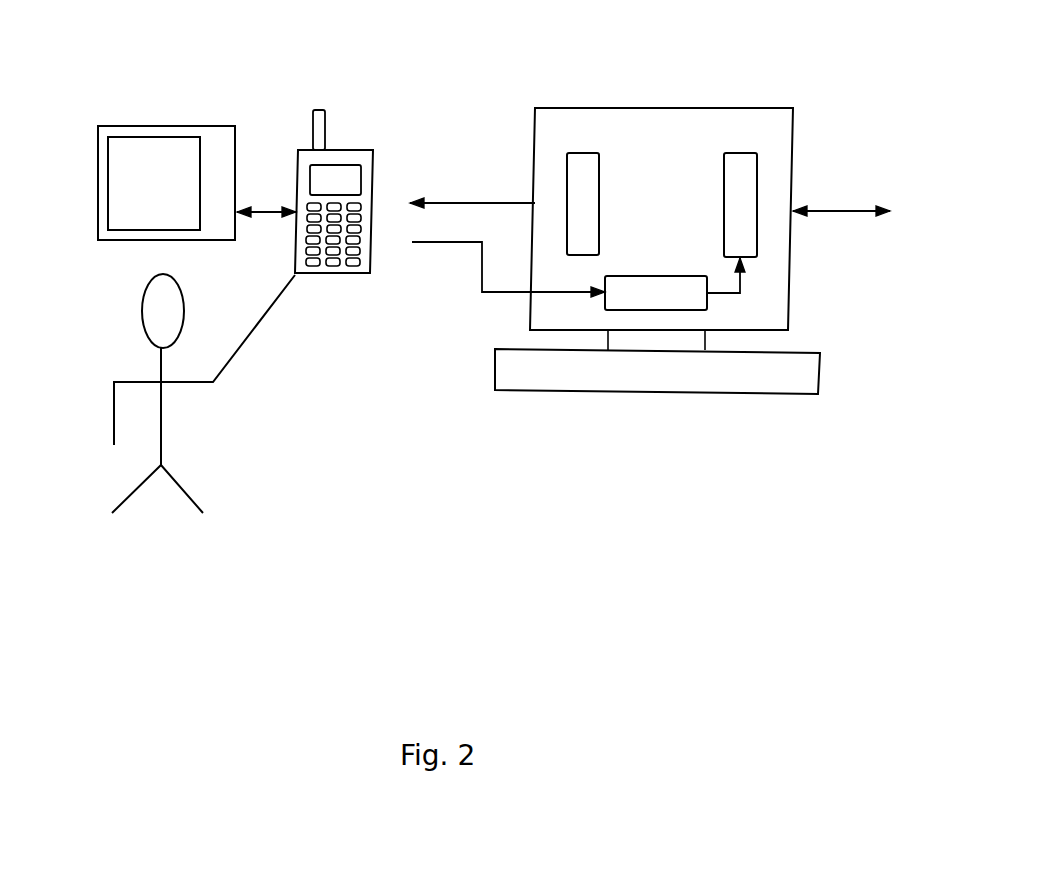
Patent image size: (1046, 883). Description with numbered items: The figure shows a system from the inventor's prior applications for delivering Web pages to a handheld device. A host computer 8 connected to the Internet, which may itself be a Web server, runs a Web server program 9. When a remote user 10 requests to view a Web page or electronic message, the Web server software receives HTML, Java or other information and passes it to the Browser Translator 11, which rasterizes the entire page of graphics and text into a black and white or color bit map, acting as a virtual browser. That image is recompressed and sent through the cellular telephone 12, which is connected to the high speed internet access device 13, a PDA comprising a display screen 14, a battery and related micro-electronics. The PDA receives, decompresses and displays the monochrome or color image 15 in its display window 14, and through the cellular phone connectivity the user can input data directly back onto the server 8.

The host computer 8 is at (650, 245).
The Web server program 9 is at (793, 142).
The remote user 10 is at (203, 393).
The Browser Translator 11 is at (641, 140).
The cellular telephone 12 is at (381, 154).
The high speed internet access device 13 is at (150, 186).
The display screen 14 is at (151, 150).
The image 15 is at (110, 191).